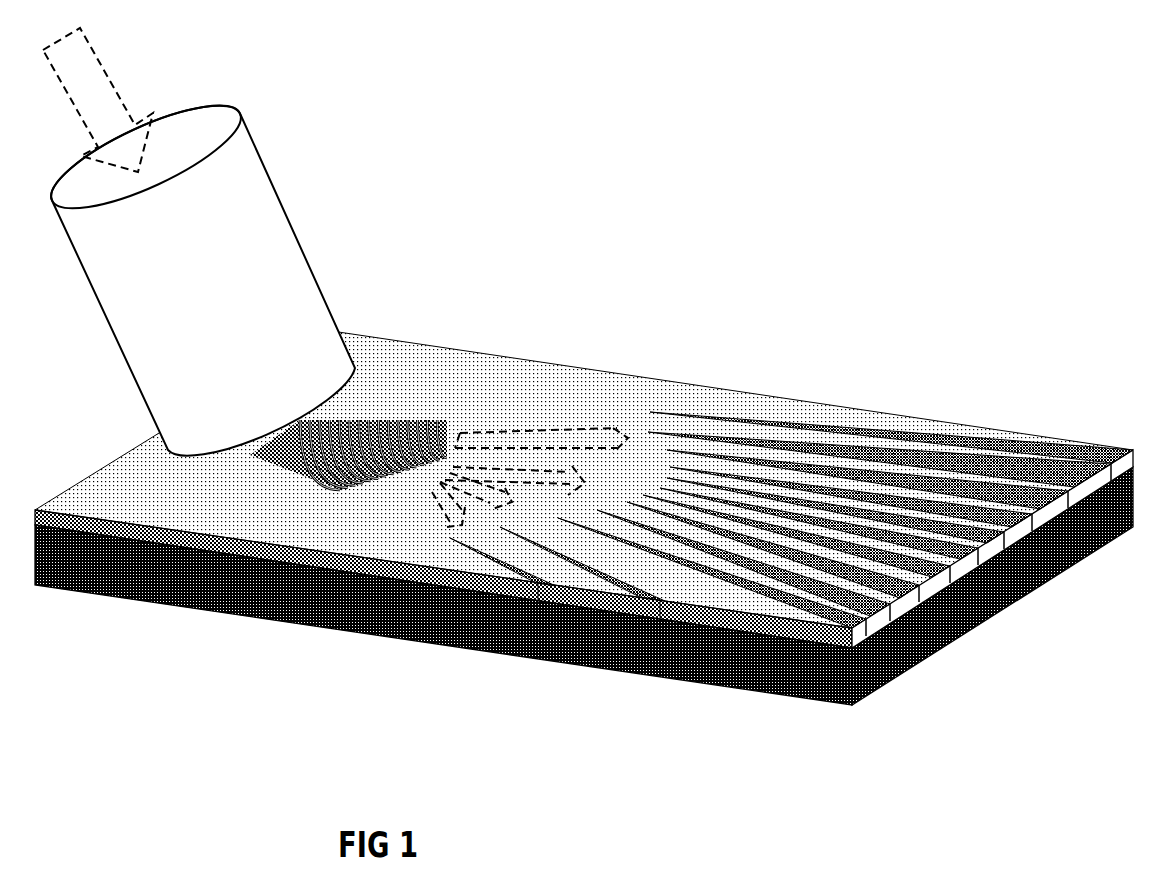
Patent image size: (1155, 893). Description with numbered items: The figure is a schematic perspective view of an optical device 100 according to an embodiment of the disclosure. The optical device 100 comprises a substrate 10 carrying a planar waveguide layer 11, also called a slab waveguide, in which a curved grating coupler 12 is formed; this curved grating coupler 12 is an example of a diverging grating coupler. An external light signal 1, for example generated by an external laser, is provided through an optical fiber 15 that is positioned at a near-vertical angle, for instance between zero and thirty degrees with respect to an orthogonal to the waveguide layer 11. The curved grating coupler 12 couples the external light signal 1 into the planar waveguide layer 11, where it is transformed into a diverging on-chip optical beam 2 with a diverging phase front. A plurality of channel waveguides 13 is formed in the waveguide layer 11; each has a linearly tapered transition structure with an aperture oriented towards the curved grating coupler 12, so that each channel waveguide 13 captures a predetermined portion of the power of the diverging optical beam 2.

The external light signal 1 is at (98, 100).
The diverging optical beam 2 is at (530, 458).
The substrate 10 is at (472, 617).
The planar waveguide layer 11 is at (346, 558).
The curved grating coupler 12 is at (308, 467).
The channel waveguides 13 is at (1060, 458).
The optical fiber 15 is at (230, 308).
The optical device 100 is at (584, 496).